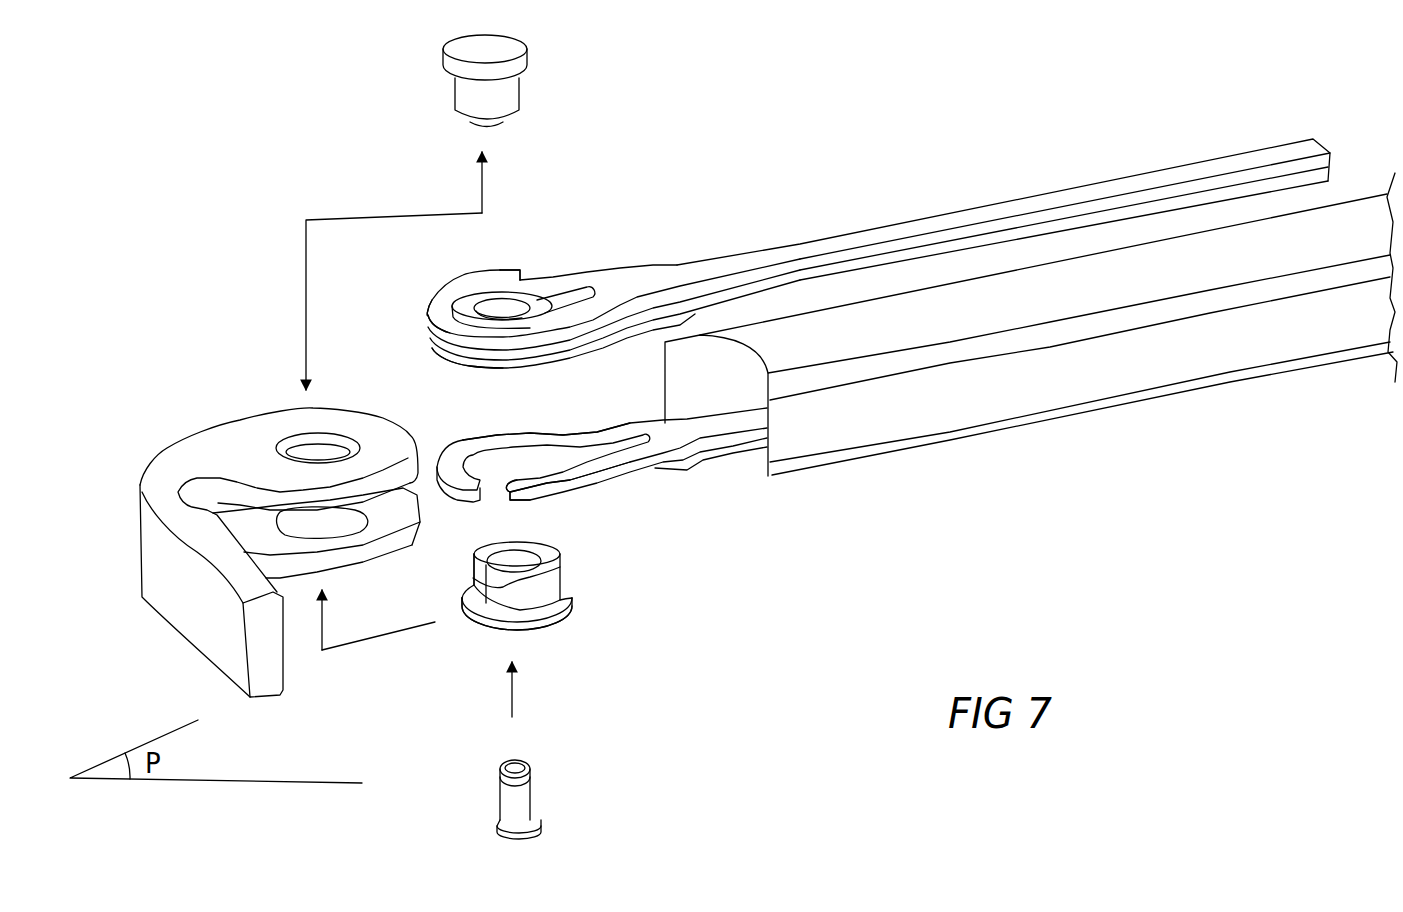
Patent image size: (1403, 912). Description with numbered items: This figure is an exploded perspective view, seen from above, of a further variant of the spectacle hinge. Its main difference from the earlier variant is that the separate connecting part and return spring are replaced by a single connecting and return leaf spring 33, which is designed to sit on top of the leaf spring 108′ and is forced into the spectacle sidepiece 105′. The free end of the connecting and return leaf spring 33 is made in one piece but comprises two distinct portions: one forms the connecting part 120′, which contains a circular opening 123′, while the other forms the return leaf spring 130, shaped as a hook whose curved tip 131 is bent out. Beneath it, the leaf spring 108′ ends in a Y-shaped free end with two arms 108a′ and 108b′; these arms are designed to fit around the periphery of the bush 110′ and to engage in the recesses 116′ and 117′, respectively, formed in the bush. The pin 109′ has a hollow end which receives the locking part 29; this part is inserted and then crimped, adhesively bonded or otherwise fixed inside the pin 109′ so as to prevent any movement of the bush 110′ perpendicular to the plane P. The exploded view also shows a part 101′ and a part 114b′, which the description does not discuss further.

The pin 109′ is at (502, 88).
The connecting and return leaf spring 33 is at (750, 247).
The curved tip 131 is at (513, 270).
The connecting part 120′ is at (550, 280).
The return leaf spring 130 is at (426, 305).
The circular opening 123′ is at (500, 317).
The bracket block 101′ is at (170, 452).
The arm 108a′ is at (472, 434).
The arm 108b′ is at (592, 482).
The leaf spring 108′ is at (707, 453).
The tine tip 114b′ is at (528, 488).
The spectacle sidepiece 105′ is at (1036, 393).
The recess 116′ is at (480, 590).
The bush 110′ is at (557, 628).
The recess 117′ is at (532, 612).
The locking part 29 is at (523, 792).